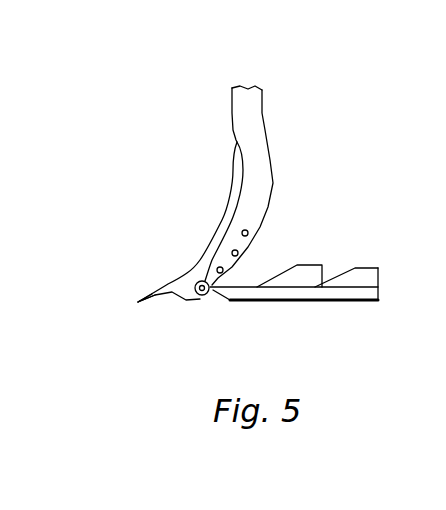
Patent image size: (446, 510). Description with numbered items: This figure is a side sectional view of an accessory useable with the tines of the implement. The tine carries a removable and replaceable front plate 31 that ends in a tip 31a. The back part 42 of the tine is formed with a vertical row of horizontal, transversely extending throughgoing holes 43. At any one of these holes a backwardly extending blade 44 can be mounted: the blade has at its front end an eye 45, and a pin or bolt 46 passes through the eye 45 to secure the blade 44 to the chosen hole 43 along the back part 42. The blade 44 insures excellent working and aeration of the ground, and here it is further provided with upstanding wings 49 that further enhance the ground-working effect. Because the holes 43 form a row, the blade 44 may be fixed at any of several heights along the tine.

The front plate 31 is at (237, 173).
The tip 31a is at (143, 297).
The back part 42 is at (263, 163).
The holes 43 is at (239, 253).
The blade 44 is at (262, 292).
The eye 45 is at (212, 293).
The pin 46 is at (190, 298).
The upstanding wings 49 is at (367, 273).